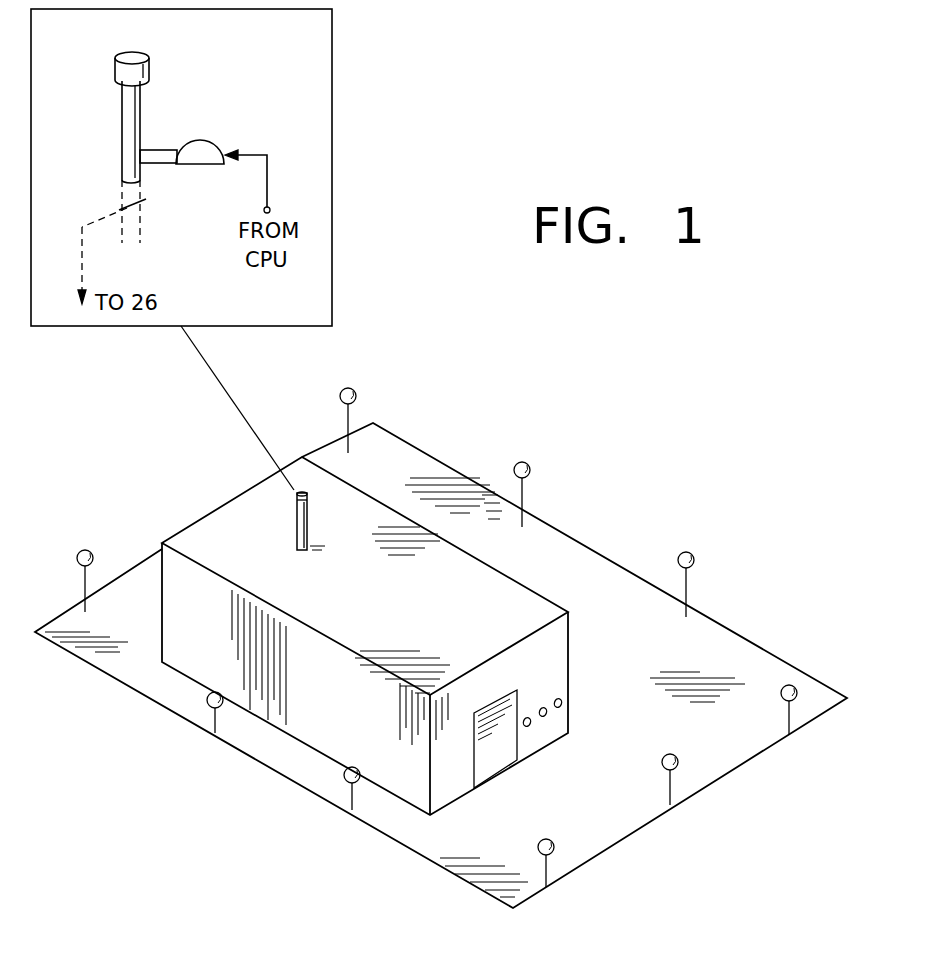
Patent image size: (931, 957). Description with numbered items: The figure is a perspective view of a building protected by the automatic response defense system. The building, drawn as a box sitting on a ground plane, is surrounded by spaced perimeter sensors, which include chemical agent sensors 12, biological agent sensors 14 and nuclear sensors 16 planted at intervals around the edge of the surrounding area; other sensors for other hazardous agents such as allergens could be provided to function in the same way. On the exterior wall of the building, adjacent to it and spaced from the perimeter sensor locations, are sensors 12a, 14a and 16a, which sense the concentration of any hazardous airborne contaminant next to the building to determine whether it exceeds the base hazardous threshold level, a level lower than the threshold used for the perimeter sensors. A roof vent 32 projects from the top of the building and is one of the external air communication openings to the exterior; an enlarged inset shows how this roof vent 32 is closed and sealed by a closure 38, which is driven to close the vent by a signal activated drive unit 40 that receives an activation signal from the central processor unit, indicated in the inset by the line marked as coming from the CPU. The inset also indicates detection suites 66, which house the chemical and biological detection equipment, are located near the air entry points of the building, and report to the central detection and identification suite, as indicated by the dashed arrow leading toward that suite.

The chemical agent sensors 12 is at (90, 547).
The biological agent sensors 14 is at (207, 699).
The nuclear sensors 16 is at (353, 386).
The chemical agent sensors adjacent the building 12a is at (527, 727).
The biological agent sensors adjacent the building 14a is at (544, 717).
The nuclear sensors adjacent the building 16a is at (562, 703).
The roof vent 32 is at (147, 95).
The closure 38 is at (160, 149).
The signal activated drive unit 40 is at (205, 152).
The detection suites 66 is at (126, 208).